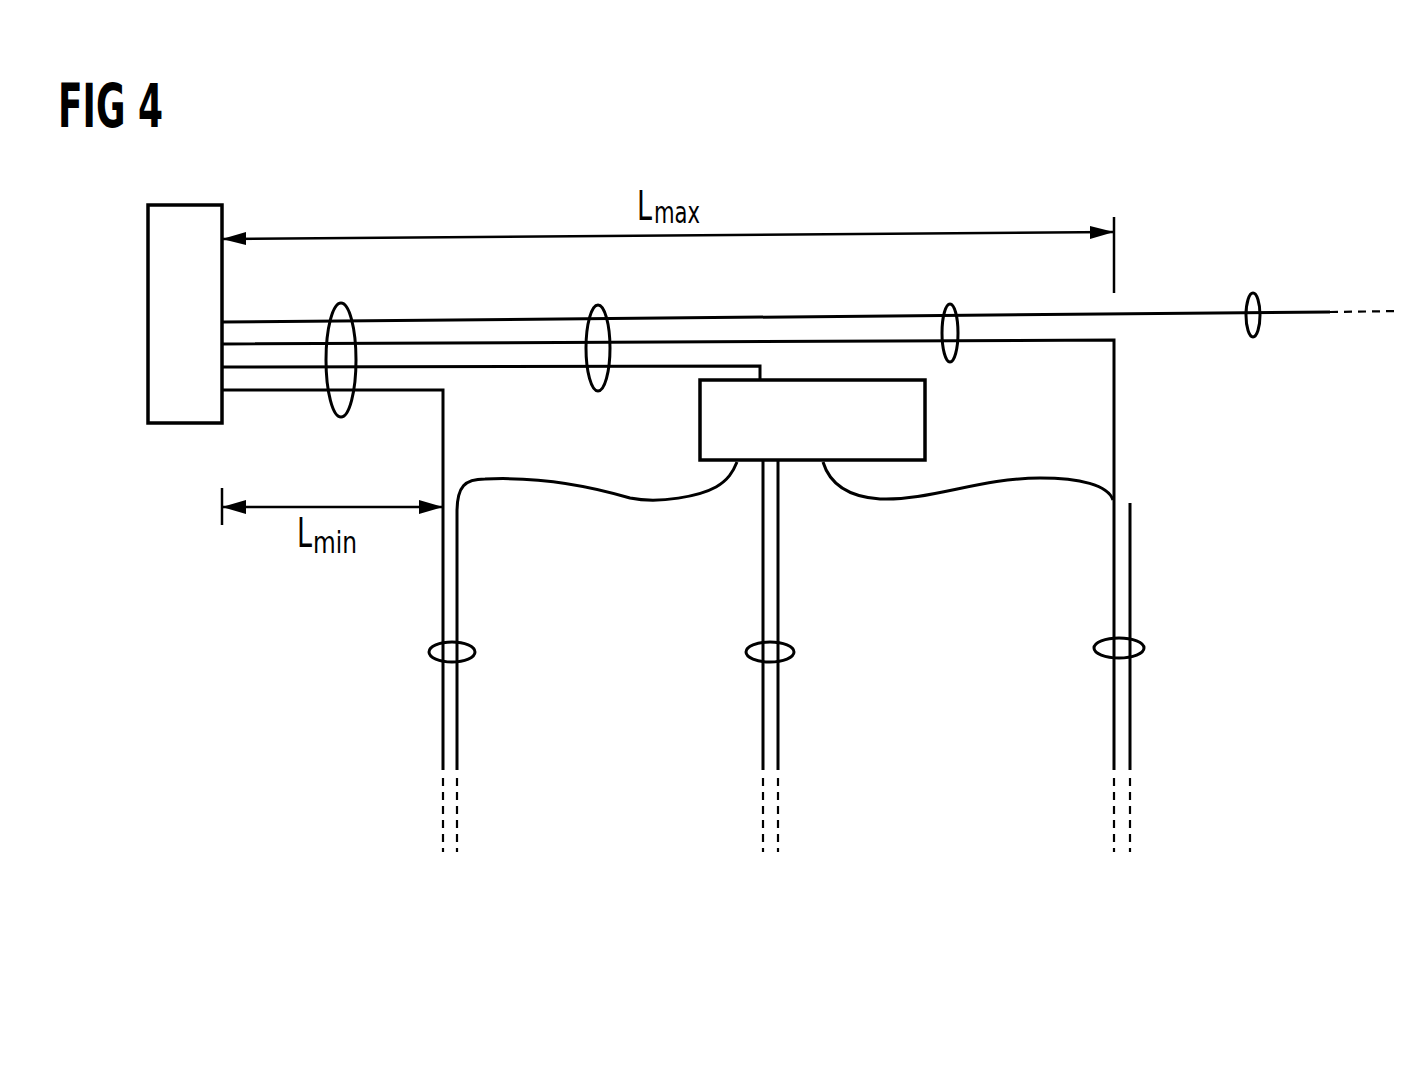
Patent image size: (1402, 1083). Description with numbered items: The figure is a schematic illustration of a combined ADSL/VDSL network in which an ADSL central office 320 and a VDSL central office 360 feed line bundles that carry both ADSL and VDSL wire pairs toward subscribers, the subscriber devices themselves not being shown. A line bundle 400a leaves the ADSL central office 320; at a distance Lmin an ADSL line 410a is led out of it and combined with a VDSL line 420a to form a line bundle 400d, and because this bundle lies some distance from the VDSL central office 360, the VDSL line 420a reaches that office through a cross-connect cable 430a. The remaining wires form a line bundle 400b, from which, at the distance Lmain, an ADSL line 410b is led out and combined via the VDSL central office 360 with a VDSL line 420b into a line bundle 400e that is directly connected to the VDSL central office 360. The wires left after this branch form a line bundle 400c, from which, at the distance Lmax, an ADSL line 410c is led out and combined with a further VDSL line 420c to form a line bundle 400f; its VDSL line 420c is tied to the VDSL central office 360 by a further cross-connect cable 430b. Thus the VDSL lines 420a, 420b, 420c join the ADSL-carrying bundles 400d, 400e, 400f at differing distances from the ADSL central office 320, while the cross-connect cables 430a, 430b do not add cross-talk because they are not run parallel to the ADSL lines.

The ADSL central office 320 is at (148, 292).
The VDSL central office 360 is at (790, 462).
The line bundle 400a is at (352, 318).
The line bundle 400b is at (607, 310).
The line bundle 400c is at (955, 308).
The line bundle 400d is at (475, 656).
The line bundle 400e is at (794, 655).
The line bundle 400f is at (1144, 650).
The ADSL line 410a is at (440, 478).
The ADSL line 410b is at (760, 595).
The ADSL line 410c is at (1112, 600).
The VDSL line 420a is at (458, 582).
The VDSL line 420b is at (779, 738).
The VDSL line 420c is at (1132, 557).
The cross-connect cable 430a is at (568, 480).
The cross-connect cable 430b is at (975, 480).